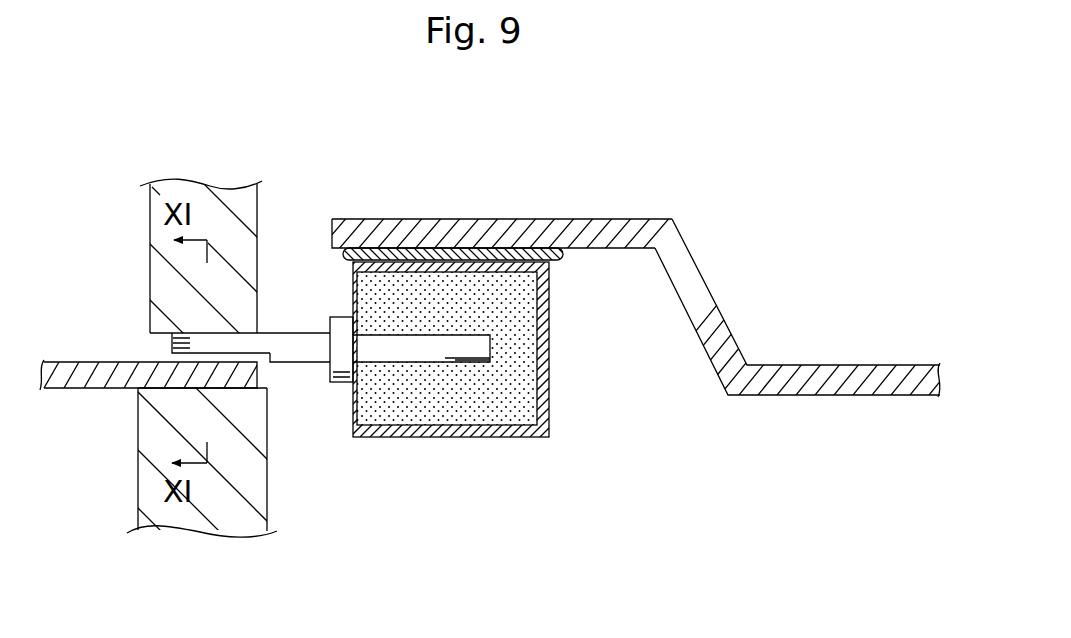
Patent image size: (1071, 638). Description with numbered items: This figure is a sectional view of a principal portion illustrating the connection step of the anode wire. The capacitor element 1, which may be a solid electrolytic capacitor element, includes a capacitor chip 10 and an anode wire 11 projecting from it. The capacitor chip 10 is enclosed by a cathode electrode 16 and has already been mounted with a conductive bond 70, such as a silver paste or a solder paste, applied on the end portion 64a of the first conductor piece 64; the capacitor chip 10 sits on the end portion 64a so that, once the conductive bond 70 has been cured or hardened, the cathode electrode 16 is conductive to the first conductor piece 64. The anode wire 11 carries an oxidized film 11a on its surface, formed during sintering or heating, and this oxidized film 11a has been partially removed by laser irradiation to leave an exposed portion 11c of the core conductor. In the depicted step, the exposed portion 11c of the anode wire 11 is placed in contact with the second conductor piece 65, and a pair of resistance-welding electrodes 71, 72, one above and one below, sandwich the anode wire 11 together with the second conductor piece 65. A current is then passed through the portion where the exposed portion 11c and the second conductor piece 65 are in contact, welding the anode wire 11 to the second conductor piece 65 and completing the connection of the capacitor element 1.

The capacitor element 1 is at (552, 413).
The capacitor chip 10 is at (428, 399).
The anode wire 11 is at (283, 331).
The oxidized film 11a is at (312, 353).
The exposed portion 11c is at (210, 360).
The cathode electrode 16 is at (547, 342).
The first conductor piece 64 is at (712, 291).
The end portion of the first conductor piece 64a is at (500, 228).
The second conductor piece 65 is at (77, 363).
The conductive bond 70 is at (560, 263).
The electrode 71 is at (163, 290).
The electrode 72 is at (148, 512).